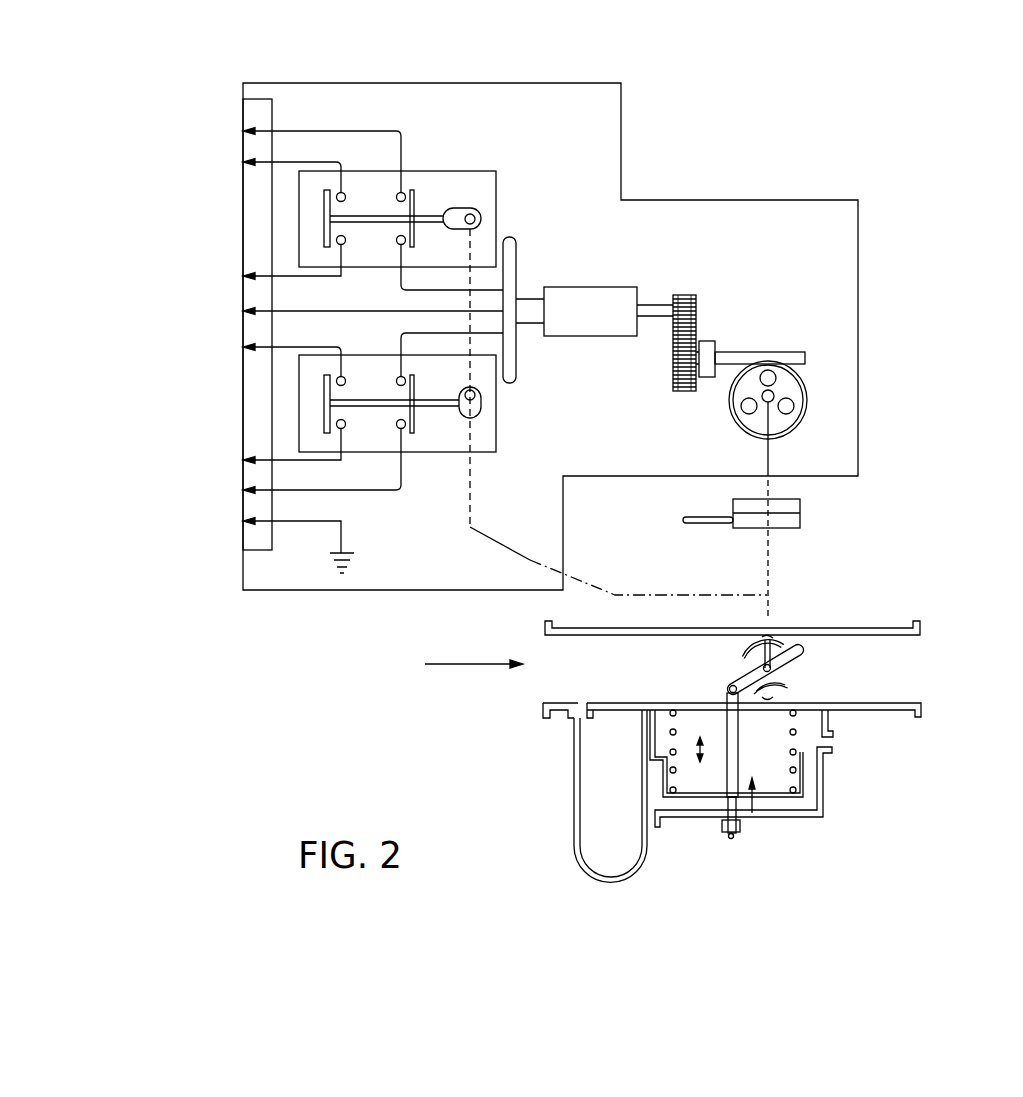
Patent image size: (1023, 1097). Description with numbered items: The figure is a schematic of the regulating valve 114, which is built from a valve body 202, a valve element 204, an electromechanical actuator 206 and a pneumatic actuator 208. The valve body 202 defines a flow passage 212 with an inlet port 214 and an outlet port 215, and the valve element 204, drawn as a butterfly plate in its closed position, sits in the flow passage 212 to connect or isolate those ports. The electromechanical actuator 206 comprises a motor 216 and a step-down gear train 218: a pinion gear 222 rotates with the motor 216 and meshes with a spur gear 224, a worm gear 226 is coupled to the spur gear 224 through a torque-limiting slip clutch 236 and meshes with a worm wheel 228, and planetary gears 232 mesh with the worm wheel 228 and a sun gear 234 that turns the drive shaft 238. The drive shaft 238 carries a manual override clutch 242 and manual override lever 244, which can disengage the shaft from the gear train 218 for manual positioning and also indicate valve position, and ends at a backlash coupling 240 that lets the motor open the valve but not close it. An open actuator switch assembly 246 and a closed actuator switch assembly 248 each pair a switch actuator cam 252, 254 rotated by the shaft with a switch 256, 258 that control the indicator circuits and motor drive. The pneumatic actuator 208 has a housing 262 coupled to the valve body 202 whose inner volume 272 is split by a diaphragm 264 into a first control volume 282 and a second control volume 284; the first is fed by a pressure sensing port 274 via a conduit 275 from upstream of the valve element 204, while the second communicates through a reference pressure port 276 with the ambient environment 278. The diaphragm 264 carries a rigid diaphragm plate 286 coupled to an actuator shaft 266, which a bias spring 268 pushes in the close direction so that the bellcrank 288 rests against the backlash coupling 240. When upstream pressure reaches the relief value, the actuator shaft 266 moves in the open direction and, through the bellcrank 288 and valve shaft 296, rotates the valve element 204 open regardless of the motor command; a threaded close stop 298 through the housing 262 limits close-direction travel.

The regulating valve 114 is at (778, 156).
The valve body 202 is at (886, 628).
The valve element 204 is at (778, 664).
The electromechanical actuator 206 is at (578, 80).
The pneumatic actuator 208 is at (762, 801).
The flow passage 212 is at (640, 680).
The inlet port 214 is at (447, 666).
The outlet port 215 is at (920, 668).
The motor 216 is at (588, 286).
The gear train 218 is at (756, 413).
The pinion gear 222 is at (697, 320).
The spur gear 224 is at (673, 355).
The worm gear 226 is at (803, 360).
The worm wheel 228 is at (807, 397).
The planetary gears 232 is at (741, 408).
The sun gear 234 is at (792, 386).
The torque-limiting slip clutch 236 is at (716, 347).
The drive shaft 238 is at (770, 455).
The backlash coupling 240 is at (757, 643).
The manual override clutch 242 is at (803, 500).
The manual override lever 244 is at (683, 520).
The open actuator switch assembly 246 is at (423, 183).
The closed actuator switch assembly 248 is at (423, 459).
The open switch actuator cam 252 is at (481, 213).
The closed switch actuator cam 254 is at (482, 406).
The open switch 256 is at (363, 216).
The closed switch 258 is at (362, 408).
The housing 262 is at (778, 802).
The diaphragm 264 is at (655, 758).
The actuator shaft 266 is at (730, 805).
The bias spring 268 is at (803, 771).
The inner volume 272 is at (765, 800).
The pressure sensing port 274 is at (598, 840).
The conduit 275 is at (578, 775).
The reference pressure port 276 is at (834, 738).
The ambient environment 278 is at (933, 774).
The first control volume 282 is at (812, 795).
The second control volume 284 is at (650, 718).
The diaphragm plate 286 is at (830, 816).
The bellcrank 288 is at (783, 647).
The valve shaft 296 is at (745, 672).
The close stop 298 is at (728, 832).